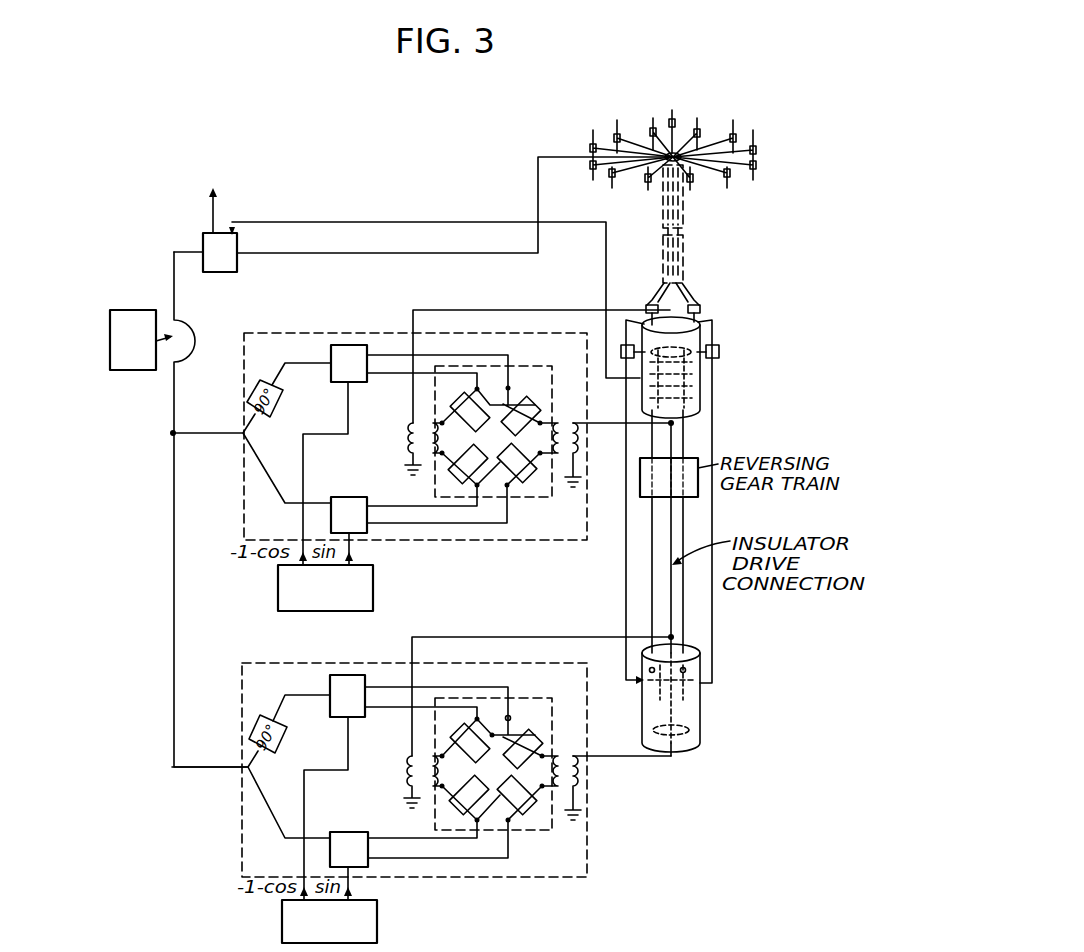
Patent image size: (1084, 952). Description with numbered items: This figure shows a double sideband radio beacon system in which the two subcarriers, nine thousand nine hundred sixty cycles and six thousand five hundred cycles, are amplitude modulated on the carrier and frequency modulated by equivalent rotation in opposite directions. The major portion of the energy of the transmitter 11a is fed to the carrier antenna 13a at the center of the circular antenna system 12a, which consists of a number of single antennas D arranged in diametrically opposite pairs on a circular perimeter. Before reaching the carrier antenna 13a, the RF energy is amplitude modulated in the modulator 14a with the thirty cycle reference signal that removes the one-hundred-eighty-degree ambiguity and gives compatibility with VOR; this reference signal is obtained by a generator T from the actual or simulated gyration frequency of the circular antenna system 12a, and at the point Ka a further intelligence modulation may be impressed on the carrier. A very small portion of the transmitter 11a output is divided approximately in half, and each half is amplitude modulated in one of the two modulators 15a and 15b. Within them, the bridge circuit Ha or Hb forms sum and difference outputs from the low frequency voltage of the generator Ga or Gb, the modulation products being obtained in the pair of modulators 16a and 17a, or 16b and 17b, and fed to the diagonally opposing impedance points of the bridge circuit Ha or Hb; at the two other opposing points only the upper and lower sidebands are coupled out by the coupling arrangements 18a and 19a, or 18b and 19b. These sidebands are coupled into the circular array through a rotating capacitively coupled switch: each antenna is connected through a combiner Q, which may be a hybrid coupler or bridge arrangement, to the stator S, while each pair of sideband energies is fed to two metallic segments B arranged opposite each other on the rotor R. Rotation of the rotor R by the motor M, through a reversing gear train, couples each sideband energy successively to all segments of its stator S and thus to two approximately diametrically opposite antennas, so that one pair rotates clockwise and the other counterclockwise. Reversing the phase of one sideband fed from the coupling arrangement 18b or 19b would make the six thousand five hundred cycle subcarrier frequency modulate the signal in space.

The transmitter 11a is at (110, 352).
The circular antenna system 12a is at (760, 172).
The carrier antenna 13a is at (673, 112).
The modulator 14a is at (208, 238).
The point Ka is at (214, 204).
The single antennas D is at (615, 124).
The modulator 15a is at (587, 493).
The modulator 16a is at (390, 303).
The modulator 17a is at (350, 527).
The coupling arrangement 18a is at (412, 439).
The coupling arrangement 19a is at (579, 444).
The bridge circuit Ha is at (588, 518).
The generator Ga is at (278, 591).
The modulator 15b is at (436, 791).
The modulator 16b is at (303, 676).
The modulator 17b is at (368, 839).
The coupling arrangement 18b is at (406, 769).
The coupling arrangement 19b is at (588, 788).
The bridge circuit Hb is at (517, 785).
The generator Gb is at (356, 924).
The combiner Q is at (651, 304).
The stator S is at (705, 317).
The armature A is at (702, 327).
The metallic segments B is at (650, 357).
The rotor R is at (666, 371).
The generator T is at (688, 396).
The motor M is at (700, 417).